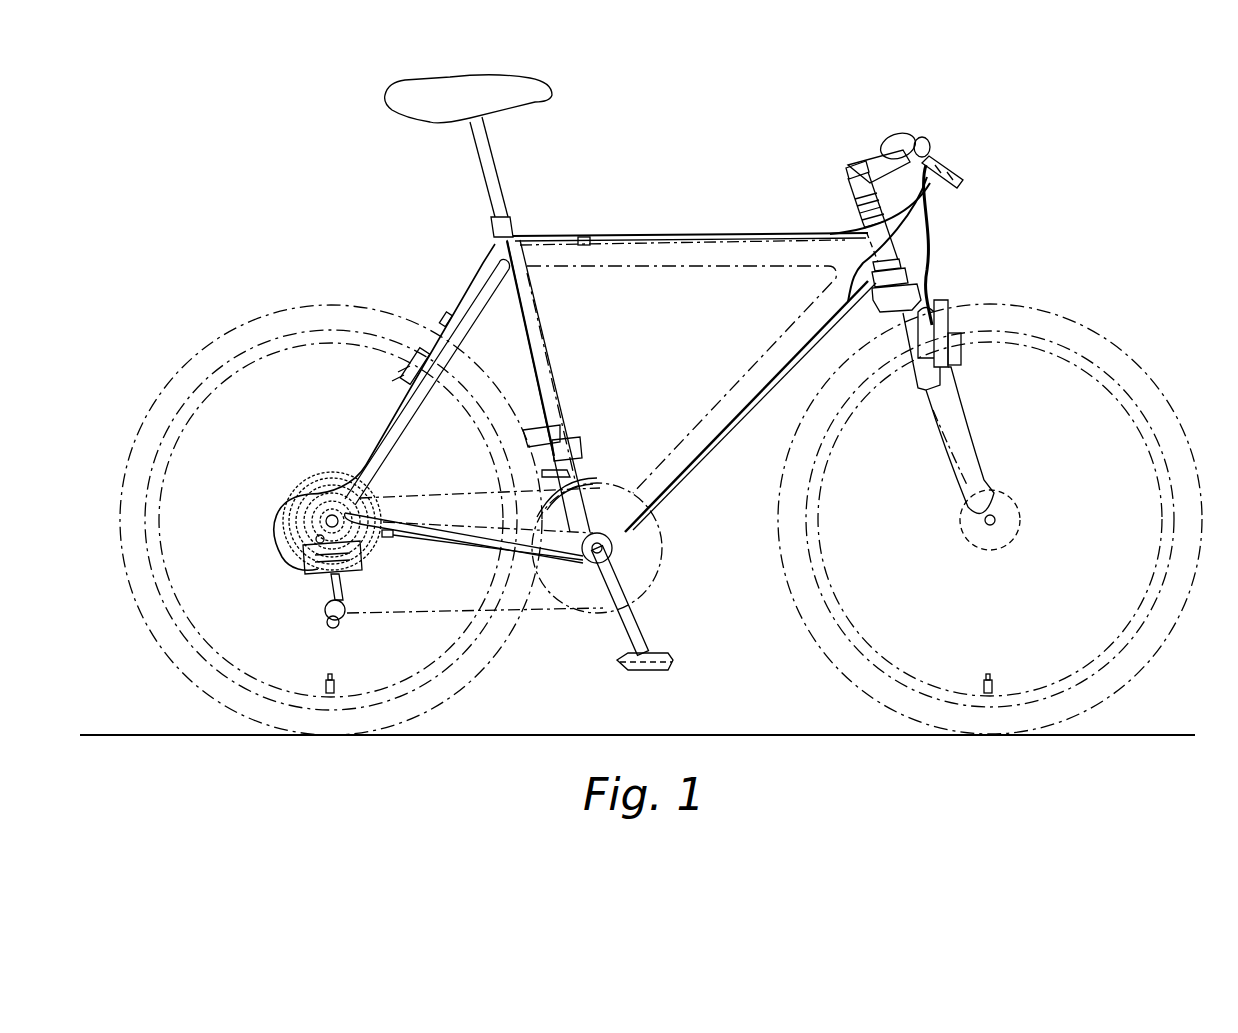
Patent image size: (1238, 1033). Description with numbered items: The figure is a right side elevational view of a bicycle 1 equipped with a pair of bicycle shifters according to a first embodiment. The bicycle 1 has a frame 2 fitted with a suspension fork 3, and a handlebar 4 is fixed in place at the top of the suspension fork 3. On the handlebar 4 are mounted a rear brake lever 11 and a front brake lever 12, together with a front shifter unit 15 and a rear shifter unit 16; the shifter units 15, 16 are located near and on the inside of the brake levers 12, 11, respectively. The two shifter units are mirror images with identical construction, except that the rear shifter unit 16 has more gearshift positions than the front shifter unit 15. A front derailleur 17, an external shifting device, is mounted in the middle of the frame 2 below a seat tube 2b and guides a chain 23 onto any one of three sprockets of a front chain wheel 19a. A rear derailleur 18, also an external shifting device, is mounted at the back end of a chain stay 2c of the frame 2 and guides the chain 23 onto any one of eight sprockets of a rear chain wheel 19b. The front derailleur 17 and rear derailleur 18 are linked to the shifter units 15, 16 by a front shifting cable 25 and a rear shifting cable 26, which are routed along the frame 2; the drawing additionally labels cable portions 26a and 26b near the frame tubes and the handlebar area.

The bicycle 1 is at (732, 203).
The frame 2 is at (755, 220).
The seat tube 2b is at (560, 392).
The chain stay 2c is at (447, 547).
The suspension fork 3 is at (931, 390).
The handlebar 4 is at (918, 137).
The rear brake lever 11 is at (943, 158).
The front brake lever 12 is at (942, 172).
The front shifter unit 15 is at (922, 147).
The rear shifter unit 16 is at (920, 137).
The front derailleur 17 is at (577, 447).
The rear derailleur 18 is at (327, 573).
The front chain wheel 19a is at (650, 580).
The rear chain wheel 19b is at (275, 532).
The chain 23 is at (430, 617).
The front shifting cable 25 is at (528, 355).
The rear shifting cable 26 is at (843, 232).
The cable portion along down tube 26a is at (707, 453).
The brake cable 26b is at (940, 222).